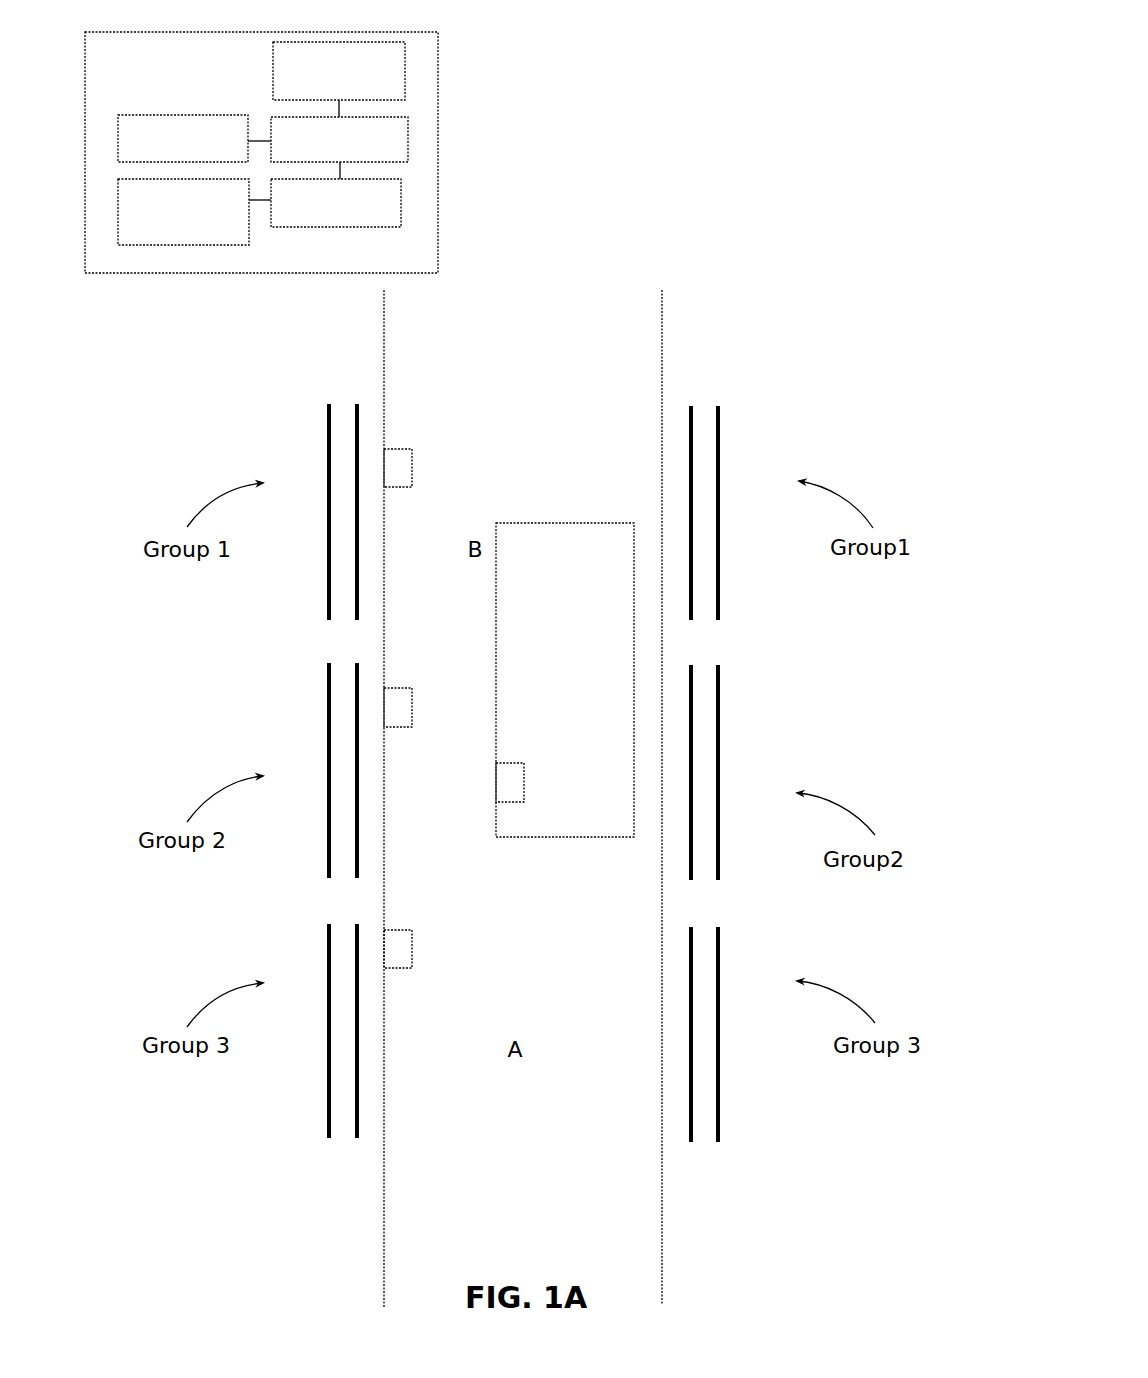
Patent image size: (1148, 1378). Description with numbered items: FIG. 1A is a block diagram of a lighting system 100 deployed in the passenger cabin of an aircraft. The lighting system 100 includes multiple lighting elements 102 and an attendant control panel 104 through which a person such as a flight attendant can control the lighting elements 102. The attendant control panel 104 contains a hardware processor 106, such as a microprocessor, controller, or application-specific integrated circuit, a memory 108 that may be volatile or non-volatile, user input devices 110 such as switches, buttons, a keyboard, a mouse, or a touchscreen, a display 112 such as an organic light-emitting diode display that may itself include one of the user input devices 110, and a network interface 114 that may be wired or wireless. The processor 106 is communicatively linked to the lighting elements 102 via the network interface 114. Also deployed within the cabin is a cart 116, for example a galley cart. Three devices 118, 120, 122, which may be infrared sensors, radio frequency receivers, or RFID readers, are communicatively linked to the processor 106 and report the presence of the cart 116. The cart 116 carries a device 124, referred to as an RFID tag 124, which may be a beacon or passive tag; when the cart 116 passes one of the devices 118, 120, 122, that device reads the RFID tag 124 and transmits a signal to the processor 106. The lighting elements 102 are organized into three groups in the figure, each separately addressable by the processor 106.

The lighting system 100 is at (766, 209).
The lighting element 102 is at (359, 418).
The attendant control panel 104 is at (438, 125).
The hardware processor 106 is at (408, 142).
The memory 108 is at (401, 195).
The user input devices 110 is at (328, 42).
The display 112 is at (198, 115).
The network interface 114 is at (157, 245).
The cart 116 is at (530, 523).
The device 118 is at (397, 930).
The device 120 is at (398, 688).
The device 122 is at (398, 449).
The RFID tag 124 is at (496, 782).